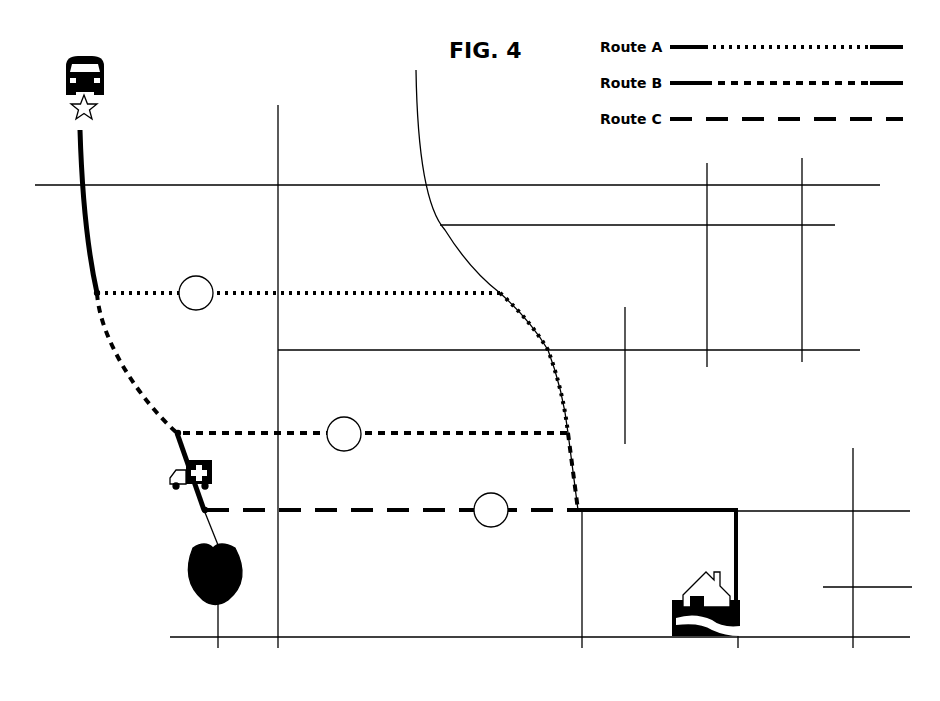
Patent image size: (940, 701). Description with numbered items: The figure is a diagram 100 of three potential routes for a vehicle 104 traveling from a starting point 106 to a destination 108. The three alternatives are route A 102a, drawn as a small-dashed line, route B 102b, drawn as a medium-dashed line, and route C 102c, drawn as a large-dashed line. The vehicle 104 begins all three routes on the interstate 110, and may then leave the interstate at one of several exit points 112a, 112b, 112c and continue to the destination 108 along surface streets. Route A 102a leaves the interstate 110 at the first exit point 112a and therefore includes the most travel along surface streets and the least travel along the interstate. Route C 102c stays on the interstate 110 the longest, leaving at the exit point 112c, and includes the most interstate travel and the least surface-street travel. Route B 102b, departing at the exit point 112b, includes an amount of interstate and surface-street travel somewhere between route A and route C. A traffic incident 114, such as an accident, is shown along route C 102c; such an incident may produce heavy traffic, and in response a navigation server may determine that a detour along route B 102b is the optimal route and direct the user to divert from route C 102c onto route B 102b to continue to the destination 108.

The diagram 100 is at (110, 571).
The route A 102a is at (240, 290).
The route B 102b is at (300, 434).
The route C 102c is at (396, 508).
The vehicle 104 is at (107, 58).
The starting point 106 is at (100, 116).
The destination 108 is at (694, 584).
The interstate 110 is at (80, 224).
The exit point 112a is at (105, 290).
The exit point 112b is at (183, 430).
The exit point 112c is at (215, 510).
The traffic incident 114 is at (170, 472).